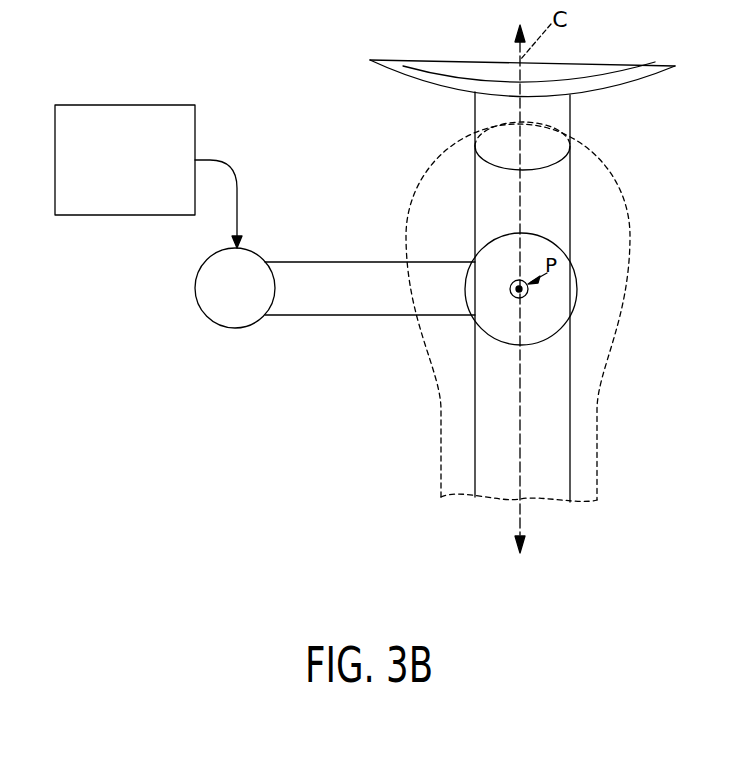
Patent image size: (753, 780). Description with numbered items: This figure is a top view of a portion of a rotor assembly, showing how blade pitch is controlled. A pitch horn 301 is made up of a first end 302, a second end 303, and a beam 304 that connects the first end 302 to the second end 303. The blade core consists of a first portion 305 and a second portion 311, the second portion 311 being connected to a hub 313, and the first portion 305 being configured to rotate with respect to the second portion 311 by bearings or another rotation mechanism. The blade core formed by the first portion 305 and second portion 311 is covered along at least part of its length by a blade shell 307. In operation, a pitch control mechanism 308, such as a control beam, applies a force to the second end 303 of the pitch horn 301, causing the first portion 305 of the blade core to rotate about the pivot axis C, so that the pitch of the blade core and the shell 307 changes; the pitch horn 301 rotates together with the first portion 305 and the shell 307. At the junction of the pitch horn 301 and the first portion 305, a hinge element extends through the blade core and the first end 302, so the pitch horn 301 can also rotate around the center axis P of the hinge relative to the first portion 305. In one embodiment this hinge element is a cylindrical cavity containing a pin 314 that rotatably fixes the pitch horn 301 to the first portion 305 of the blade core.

The pitch horn 301 is at (341, 231).
The first end 302 is at (560, 245).
The second end 303 is at (235, 320).
The beam 304 is at (347, 312).
The first portion 305 is at (562, 417).
The blade shell 307 is at (620, 195).
The pitch control mechanism 308 is at (127, 102).
The second portion 311 is at (543, 123).
The hub 313 is at (610, 83).
The pin 314 is at (530, 296).